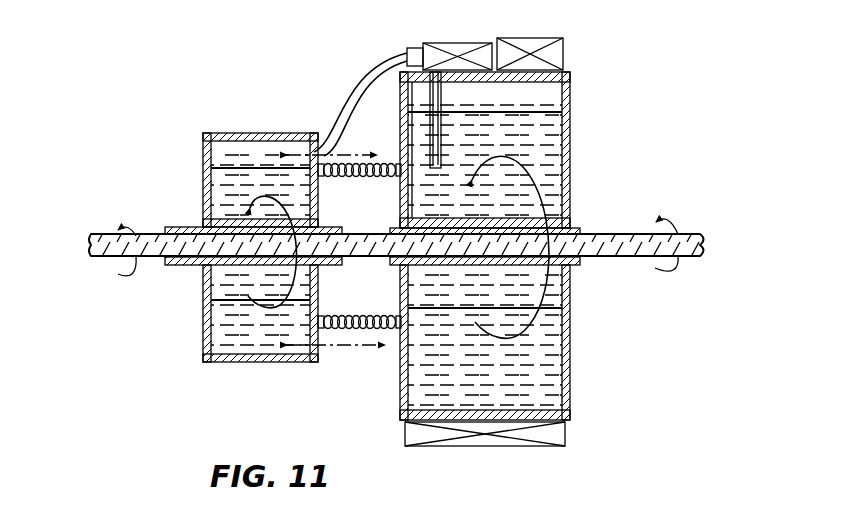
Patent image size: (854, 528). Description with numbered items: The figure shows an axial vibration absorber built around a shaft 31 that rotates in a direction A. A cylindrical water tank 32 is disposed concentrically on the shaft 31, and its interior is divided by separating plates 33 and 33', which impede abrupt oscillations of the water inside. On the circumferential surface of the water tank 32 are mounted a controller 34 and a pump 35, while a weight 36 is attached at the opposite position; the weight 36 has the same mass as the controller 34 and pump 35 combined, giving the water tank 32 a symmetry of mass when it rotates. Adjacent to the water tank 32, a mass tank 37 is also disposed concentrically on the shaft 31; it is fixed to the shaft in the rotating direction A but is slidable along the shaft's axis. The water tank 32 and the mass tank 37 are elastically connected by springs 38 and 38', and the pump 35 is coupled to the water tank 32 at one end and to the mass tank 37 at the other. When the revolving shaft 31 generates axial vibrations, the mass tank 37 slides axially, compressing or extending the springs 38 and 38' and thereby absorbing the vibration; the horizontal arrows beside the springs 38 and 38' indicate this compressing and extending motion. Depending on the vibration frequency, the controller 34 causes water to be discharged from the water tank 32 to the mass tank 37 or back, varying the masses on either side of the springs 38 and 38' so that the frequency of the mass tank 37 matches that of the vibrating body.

The shaft 31 is at (92, 258).
The cylindrical water tank 32 is at (574, 128).
The separating plate 33 is at (392, 219).
The separating plate 33' is at (416, 339).
The controller 34 is at (556, 52).
The pump 35 is at (447, 46).
The weight 36 is at (497, 440).
The mass tank 37 is at (210, 150).
The spring 38 is at (344, 144).
The spring 38' is at (344, 315).
The rotating direction A is at (123, 232).